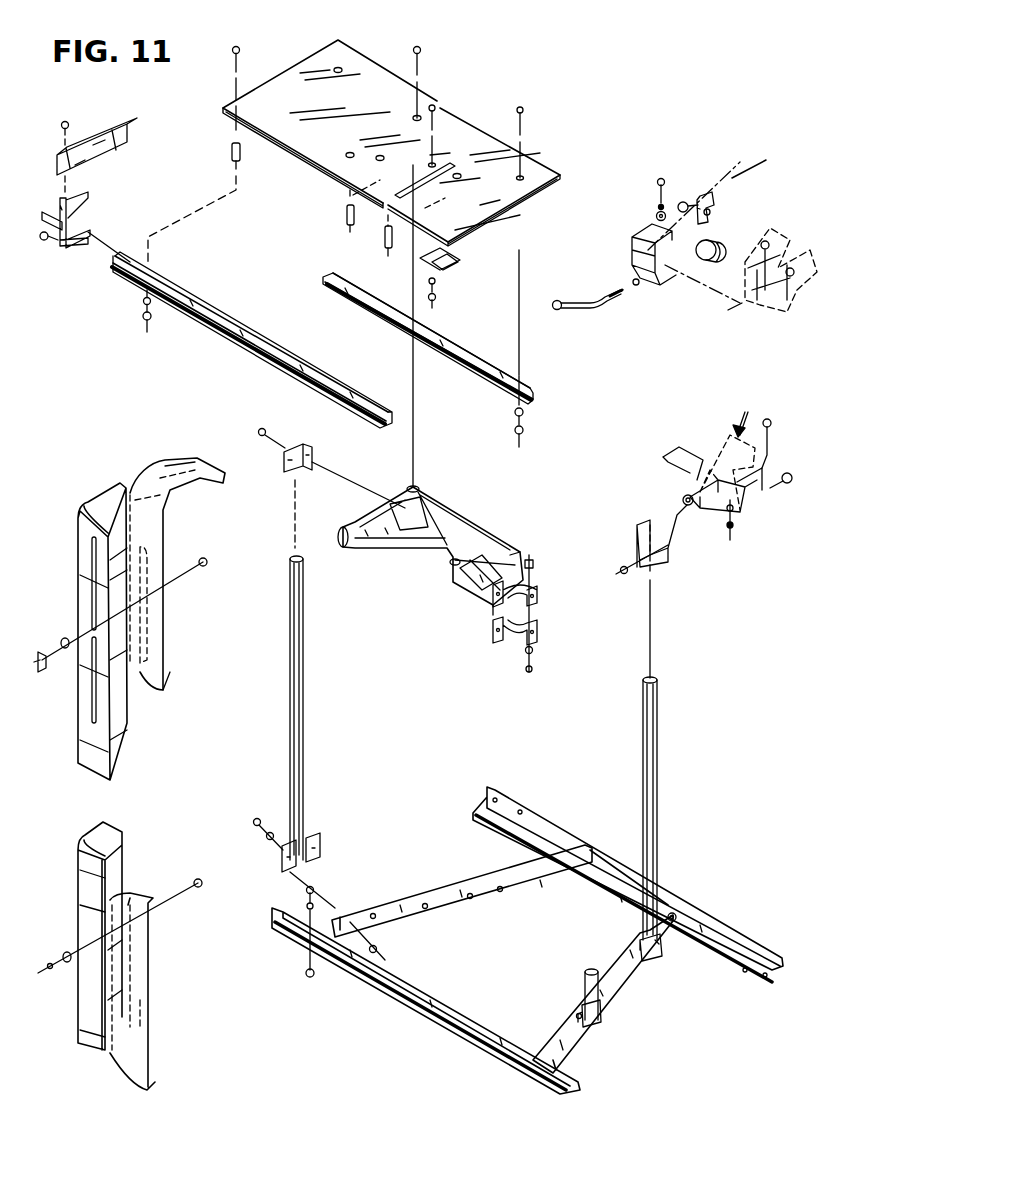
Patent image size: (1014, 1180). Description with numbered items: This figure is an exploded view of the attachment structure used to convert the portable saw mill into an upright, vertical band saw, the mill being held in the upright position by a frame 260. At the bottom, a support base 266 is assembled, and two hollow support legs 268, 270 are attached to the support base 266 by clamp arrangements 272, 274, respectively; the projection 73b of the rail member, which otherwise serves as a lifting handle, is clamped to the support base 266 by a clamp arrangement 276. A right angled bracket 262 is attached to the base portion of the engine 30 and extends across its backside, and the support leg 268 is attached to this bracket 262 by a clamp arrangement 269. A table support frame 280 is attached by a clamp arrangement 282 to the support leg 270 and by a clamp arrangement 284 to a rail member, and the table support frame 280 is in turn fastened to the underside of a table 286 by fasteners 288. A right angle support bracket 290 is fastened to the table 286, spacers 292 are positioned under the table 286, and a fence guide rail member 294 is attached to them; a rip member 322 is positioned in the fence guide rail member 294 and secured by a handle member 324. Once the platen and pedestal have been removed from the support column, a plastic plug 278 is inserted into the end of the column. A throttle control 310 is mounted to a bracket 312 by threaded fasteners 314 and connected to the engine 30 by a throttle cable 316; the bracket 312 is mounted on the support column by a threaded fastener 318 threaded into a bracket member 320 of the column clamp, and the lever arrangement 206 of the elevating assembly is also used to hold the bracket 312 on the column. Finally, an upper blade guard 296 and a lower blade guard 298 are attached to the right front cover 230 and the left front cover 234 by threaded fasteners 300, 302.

The table 286 is at (360, 60).
The fasteners 288 is at (445, 108).
The spacers 292 is at (242, 150).
The rip member 322 is at (110, 130).
The handle member 324 is at (48, 242).
The fence guide rail member 294 is at (208, 250).
The right angle support bracket 290 is at (424, 342).
The threaded fasteners 314 is at (632, 262).
The bracket 312 is at (642, 236).
The throttle control 310 is at (705, 190).
The throttle cable 316 is at (733, 175).
The plastic plug 278 is at (712, 238).
The bracket member 320 is at (808, 222).
The threaded fastener 318 is at (730, 308).
The lever and clamp arrangement 206 is at (552, 308).
The engine 30 is at (746, 412).
The right angled bracket 262 is at (668, 460).
The clamp arrangement 269 is at (637, 545).
The support leg 268 is at (658, 770).
The clamp arrangement 272 is at (650, 952).
The support leg 270 is at (292, 680).
The clamp arrangement 274 is at (310, 838).
The clamp arrangement 282 is at (285, 478).
The table support frame 280 is at (395, 545).
The clamp arrangement 284 is at (490, 628).
The frame 260 is at (425, 834).
The support base 266 is at (435, 1010).
The projection 73b is at (580, 988).
The clamp arrangement 276 is at (596, 1020).
The upper blade guard 296 is at (86, 606).
The right front cover 230 is at (133, 525).
The threaded fasteners 300 is at (40, 660).
The lower blade guard 298 is at (120, 860).
The threaded fasteners 302 is at (100, 975).
The left front cover 234 is at (150, 1050).